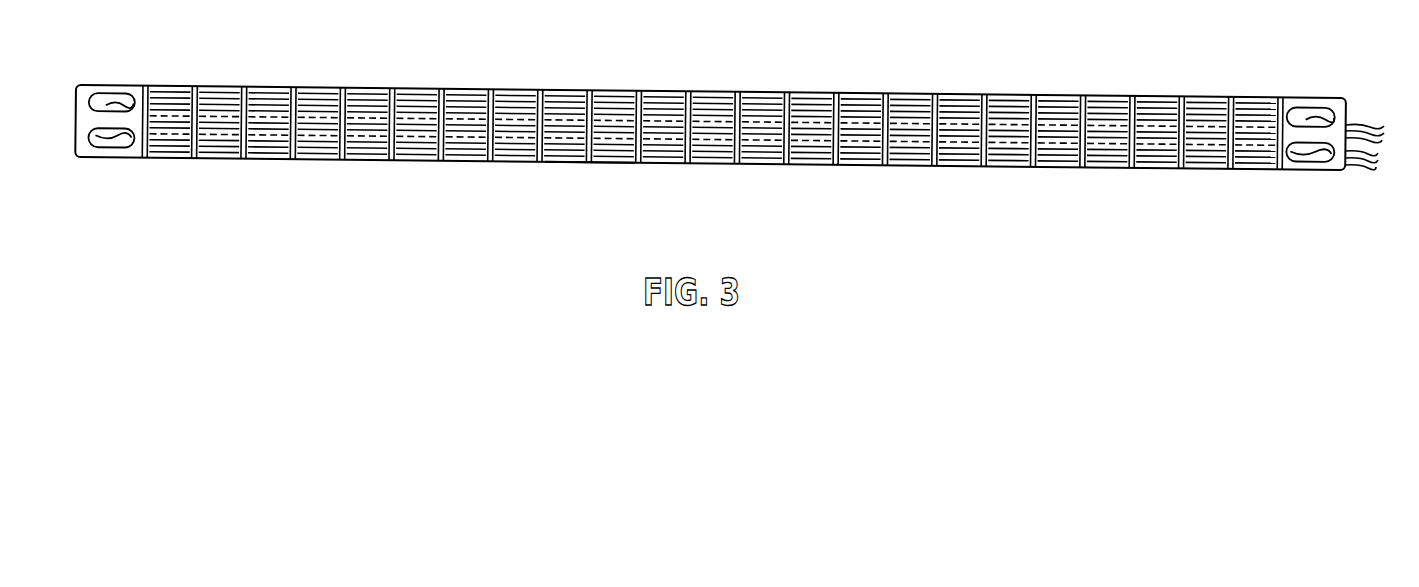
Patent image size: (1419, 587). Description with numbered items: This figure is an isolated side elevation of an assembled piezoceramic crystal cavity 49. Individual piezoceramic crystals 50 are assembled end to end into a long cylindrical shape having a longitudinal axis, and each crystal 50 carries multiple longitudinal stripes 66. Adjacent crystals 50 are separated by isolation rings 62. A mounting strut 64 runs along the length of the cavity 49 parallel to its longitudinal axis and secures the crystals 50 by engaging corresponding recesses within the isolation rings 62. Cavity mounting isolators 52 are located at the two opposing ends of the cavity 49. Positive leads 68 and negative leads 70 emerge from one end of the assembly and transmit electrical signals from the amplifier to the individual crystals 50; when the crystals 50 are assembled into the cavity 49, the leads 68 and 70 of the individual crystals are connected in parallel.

The piezoceramic crystal cavity 49 is at (1345, 90).
The piezoceramic crystal 50 is at (525, 150).
The cavity mounting isolator 52 is at (82, 153).
The isolation ring 62 is at (587, 160).
The mounting strut 64 is at (755, 138).
The longitudinal stripe 66 is at (863, 112).
The positive lead 68 is at (1372, 165).
The negative lead 70 is at (1362, 142).